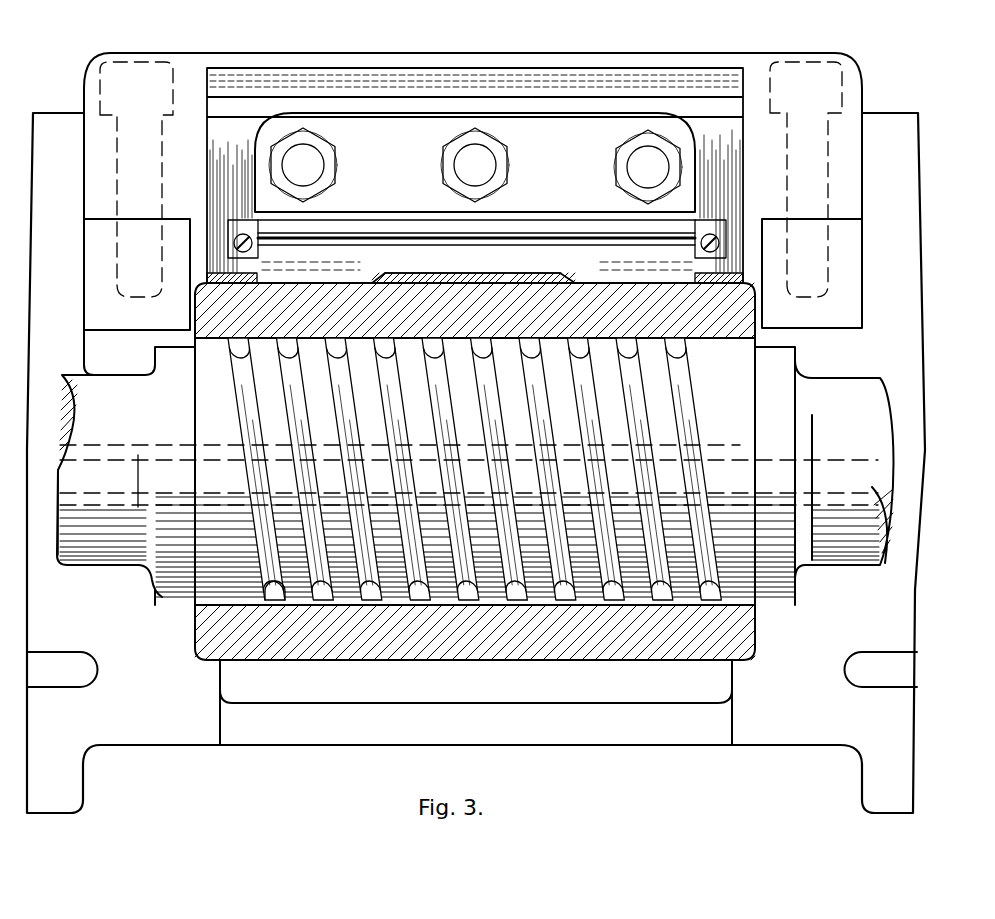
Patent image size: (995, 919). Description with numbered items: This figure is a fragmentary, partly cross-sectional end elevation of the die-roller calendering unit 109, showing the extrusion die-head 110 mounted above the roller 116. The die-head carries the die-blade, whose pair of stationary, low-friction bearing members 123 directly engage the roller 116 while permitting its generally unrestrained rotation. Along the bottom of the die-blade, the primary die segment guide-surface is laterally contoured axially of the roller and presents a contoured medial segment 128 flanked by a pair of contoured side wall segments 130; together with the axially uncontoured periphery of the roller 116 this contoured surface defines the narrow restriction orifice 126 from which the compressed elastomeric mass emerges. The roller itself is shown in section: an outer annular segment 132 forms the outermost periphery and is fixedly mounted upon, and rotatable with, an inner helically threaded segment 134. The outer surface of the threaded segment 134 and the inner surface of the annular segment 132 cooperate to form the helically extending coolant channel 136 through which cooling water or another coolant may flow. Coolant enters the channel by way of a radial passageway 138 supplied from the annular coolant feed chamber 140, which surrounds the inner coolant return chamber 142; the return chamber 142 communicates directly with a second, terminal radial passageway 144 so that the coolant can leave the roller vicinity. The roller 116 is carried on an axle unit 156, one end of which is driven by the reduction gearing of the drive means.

The die-roller calendering unit 109 is at (522, 22).
The extrusion die-head 110 is at (606, 53).
The bearing members 123 is at (262, 266).
The narrow restriction orifice 126 is at (485, 283).
The contoured medial segment 128 is at (445, 283).
The contoured side wall segments 130 is at (380, 281).
The roller 116 is at (442, 284).
The outer annular segment 132 is at (748, 313).
The inner helically threaded segment 134 is at (740, 368).
The axle unit 156 is at (112, 390).
The radial passageway 138 is at (252, 451).
The inner coolant return chamber 142 is at (104, 466).
The terminal radial passageway 144 is at (721, 513).
The annular coolant feed chamber 140 is at (104, 508).
The helically extending coolant channel 136 is at (255, 601).